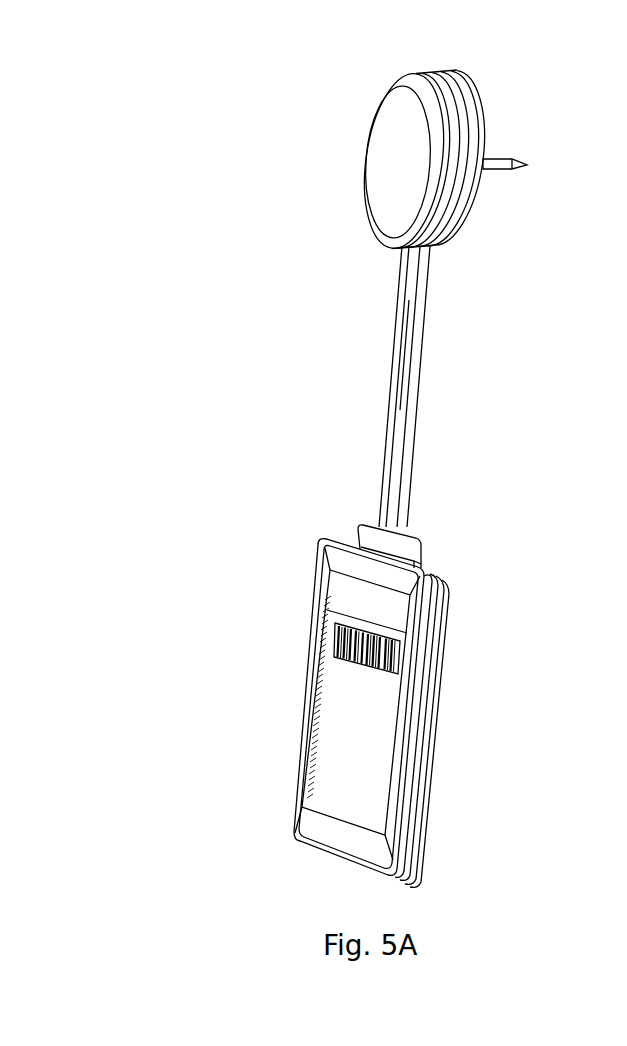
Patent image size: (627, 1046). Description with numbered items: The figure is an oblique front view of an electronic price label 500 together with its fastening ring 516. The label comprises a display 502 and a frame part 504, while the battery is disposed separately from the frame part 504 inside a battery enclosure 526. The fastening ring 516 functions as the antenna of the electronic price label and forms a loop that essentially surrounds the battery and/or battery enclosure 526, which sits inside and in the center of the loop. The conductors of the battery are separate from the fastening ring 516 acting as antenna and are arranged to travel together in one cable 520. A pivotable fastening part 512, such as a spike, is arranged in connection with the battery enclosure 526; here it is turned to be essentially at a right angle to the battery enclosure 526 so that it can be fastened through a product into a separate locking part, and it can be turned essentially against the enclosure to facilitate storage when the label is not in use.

The wearable badge device 500 is at (170, 123).
The display 502 is at (352, 723).
The frame part 504 is at (345, 597).
The fastening part 512 is at (495, 162).
The fastening ring 516 is at (400, 333).
The cable 520 is at (400, 408).
The battery enclosure 526 is at (408, 180).